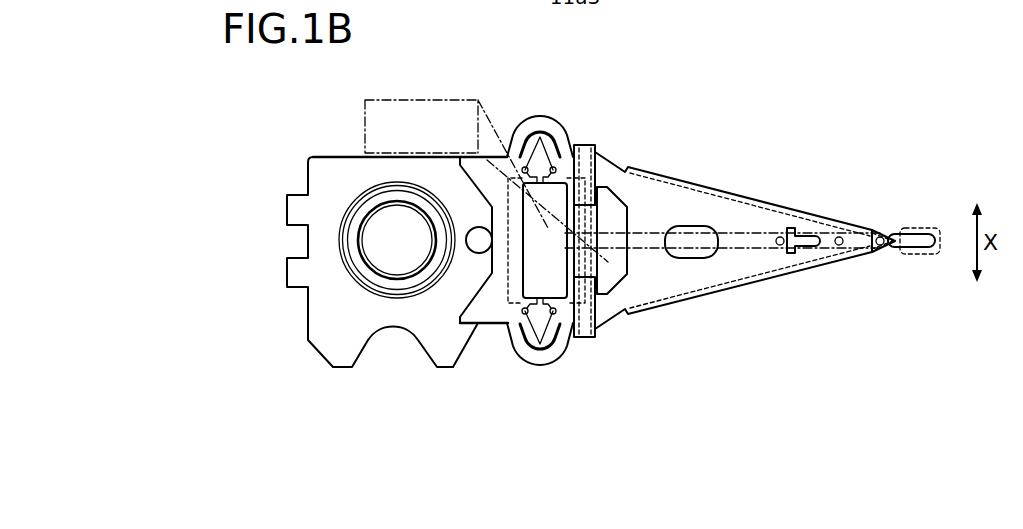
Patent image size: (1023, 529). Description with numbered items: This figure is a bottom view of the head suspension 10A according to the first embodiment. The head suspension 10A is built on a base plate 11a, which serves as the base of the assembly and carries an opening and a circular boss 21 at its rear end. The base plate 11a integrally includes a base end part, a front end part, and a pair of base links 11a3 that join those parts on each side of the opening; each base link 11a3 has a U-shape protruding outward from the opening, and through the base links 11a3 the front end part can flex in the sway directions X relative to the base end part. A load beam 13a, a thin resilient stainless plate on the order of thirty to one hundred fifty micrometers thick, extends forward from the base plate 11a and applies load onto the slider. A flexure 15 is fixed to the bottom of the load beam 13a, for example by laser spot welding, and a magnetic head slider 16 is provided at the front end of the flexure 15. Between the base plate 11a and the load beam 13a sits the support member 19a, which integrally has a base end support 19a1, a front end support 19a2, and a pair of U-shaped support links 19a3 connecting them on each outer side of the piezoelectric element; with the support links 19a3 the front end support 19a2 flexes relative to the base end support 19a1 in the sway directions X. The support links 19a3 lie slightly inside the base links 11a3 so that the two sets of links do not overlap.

The head suspension 10A is at (762, 198).
The base plate 11a is at (332, 182).
The base links 11a3 is at (540, 118).
The load beam 13a is at (688, 193).
The flexure 15 is at (836, 233).
The magnetic head slider 16 is at (920, 229).
The support member 19a is at (598, 215).
The base end support 19a1 is at (518, 235).
The front end support 19a2 is at (527, 185).
The support links 19a3 is at (553, 140).
The circular boss 21 is at (368, 222).